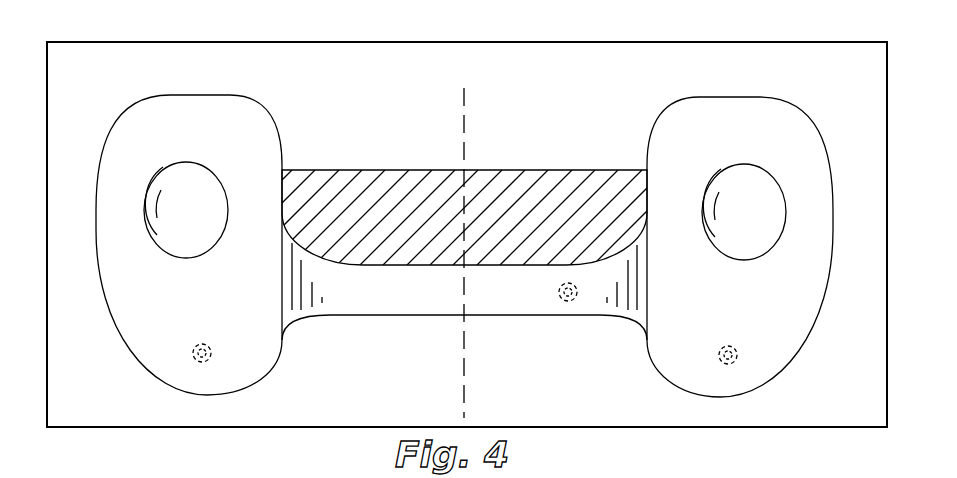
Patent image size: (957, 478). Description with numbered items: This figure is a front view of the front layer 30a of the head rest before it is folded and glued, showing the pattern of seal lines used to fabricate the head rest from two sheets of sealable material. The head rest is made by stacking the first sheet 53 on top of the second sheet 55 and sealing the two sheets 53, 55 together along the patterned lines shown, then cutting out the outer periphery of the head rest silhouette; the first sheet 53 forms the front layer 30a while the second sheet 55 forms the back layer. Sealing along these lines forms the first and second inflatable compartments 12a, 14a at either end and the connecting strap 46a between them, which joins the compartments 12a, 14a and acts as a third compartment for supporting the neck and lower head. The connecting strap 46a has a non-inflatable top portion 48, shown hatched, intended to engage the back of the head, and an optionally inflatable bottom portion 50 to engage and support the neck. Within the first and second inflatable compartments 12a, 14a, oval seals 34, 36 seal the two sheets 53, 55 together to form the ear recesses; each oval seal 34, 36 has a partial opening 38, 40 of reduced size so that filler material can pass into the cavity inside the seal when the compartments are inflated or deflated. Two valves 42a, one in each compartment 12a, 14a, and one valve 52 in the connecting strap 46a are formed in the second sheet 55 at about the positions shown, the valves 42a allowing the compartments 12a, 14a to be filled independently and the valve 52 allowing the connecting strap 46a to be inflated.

The first sheet 53 is at (467, 221).
The second sheet 55 is at (630, 42).
The second inflatable compartment 14a is at (128, 114).
The first inflatable compartment 12a is at (790, 108).
The front layer 30a is at (752, 235).
The seal 36 is at (147, 195).
The seal 34 is at (785, 192).
The partial opening 40 is at (182, 165).
The partial opening 38 is at (748, 168).
The connecting strap 46a is at (375, 150).
The top portion 48 is at (527, 190).
The bottom portion 50 is at (532, 317).
The valve 52 is at (572, 302).
The valve 42a is at (193, 353).